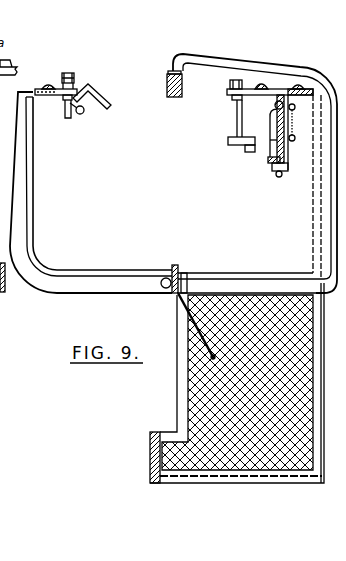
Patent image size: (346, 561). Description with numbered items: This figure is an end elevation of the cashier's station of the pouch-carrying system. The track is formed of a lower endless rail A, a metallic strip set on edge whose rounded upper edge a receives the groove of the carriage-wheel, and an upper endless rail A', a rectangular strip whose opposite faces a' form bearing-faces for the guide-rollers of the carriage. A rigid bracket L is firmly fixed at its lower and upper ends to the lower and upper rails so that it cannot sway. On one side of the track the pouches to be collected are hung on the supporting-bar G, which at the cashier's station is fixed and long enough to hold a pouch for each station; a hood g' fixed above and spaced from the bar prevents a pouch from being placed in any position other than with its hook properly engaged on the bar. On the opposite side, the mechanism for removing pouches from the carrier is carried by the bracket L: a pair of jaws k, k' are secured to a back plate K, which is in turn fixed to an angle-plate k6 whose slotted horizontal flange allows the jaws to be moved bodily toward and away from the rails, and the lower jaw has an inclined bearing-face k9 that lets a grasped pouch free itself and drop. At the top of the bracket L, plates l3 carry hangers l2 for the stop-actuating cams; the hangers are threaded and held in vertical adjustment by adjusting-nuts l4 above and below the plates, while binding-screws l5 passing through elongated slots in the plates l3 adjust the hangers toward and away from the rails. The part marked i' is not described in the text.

The bracket L is at (224, 60).
The lower endless rail A is at (236, 383).
The rounded upper edge of lower rail a is at (180, 273).
The upper endless rail A' is at (213, 217).
The bearing-faces of upper rail a' is at (119, 87).
The hood g' is at (91, 95).
The supporting-bar G is at (90, 102).
The plate l3 is at (252, 90).
The adjusting-nut l4 is at (226, 90).
The binding-screw l5 is at (263, 89).
The hanger l2 is at (237, 117).
The block i' is at (246, 159).
The back plate K is at (285, 162).
The jaw k is at (269, 129).
The jaw k' is at (265, 173).
The inclined bearing-face k9 is at (273, 142).
The angle-plate k6 is at (295, 107).